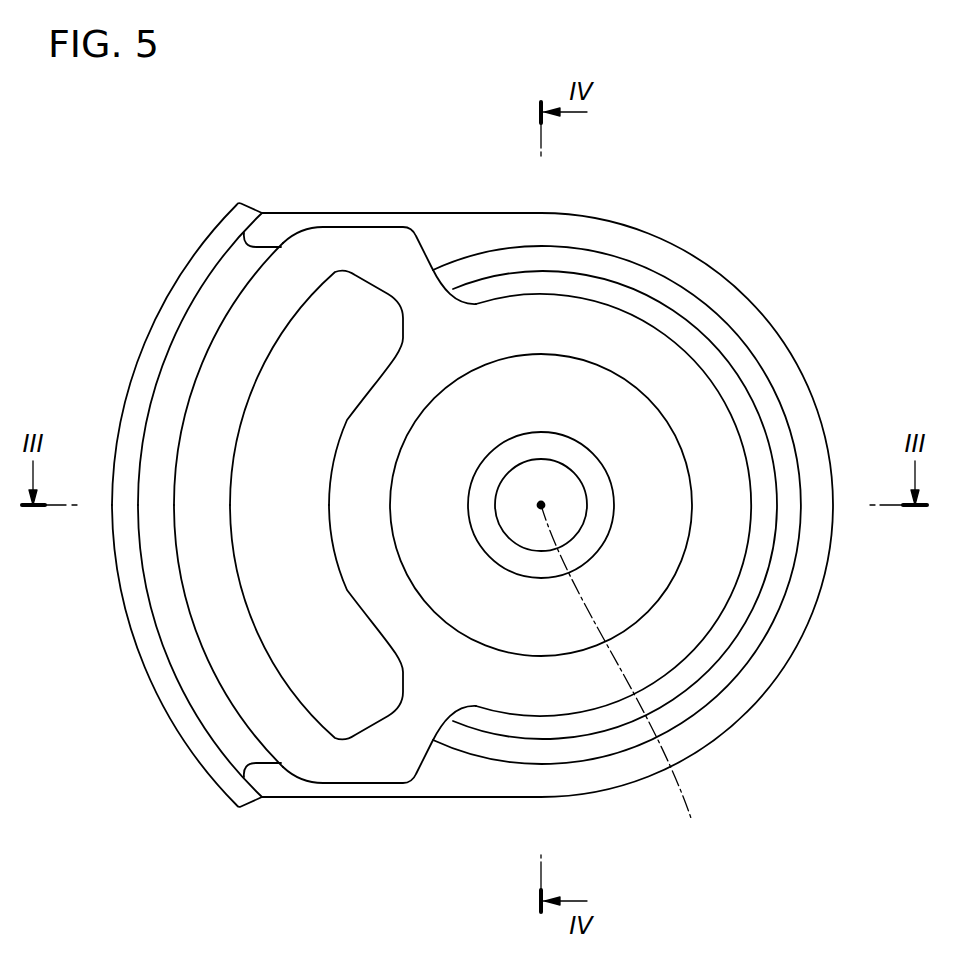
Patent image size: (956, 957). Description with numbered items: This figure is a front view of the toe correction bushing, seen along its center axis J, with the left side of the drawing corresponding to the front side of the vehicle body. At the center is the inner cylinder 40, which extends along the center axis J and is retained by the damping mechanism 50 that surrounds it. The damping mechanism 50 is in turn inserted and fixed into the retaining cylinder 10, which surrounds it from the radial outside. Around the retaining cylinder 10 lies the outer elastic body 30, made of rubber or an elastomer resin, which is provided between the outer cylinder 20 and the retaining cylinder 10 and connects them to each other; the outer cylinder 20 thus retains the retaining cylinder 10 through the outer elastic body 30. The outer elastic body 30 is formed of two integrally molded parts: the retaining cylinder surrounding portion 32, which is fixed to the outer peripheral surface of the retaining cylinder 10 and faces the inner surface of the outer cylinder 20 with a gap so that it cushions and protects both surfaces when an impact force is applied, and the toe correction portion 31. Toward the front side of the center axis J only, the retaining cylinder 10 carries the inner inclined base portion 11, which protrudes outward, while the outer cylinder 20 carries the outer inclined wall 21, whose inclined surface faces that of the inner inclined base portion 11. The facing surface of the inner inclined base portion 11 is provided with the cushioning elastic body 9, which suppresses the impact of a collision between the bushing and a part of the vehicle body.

The cushioning elastic body 9 is at (321, 690).
The retaining cylinder 10 is at (758, 547).
The inner inclined base portion 11 is at (361, 245).
The outer cylinder 20 is at (779, 692).
The outer inclined wall 21 is at (160, 672).
The outer elastic body 30 is at (509, 261).
The toe correction portion 31 is at (160, 578).
The retaining cylinder surrounding portion 32 is at (615, 293).
The inner cylinder 40 is at (583, 462).
The damping mechanism 50 is at (694, 449).
The center axis J is at (619, 679).